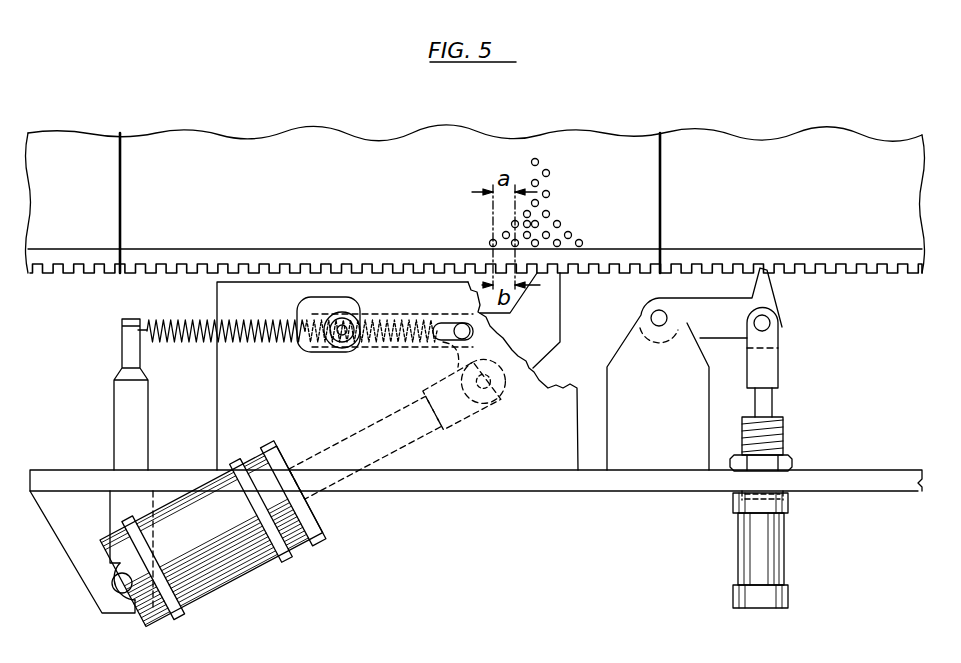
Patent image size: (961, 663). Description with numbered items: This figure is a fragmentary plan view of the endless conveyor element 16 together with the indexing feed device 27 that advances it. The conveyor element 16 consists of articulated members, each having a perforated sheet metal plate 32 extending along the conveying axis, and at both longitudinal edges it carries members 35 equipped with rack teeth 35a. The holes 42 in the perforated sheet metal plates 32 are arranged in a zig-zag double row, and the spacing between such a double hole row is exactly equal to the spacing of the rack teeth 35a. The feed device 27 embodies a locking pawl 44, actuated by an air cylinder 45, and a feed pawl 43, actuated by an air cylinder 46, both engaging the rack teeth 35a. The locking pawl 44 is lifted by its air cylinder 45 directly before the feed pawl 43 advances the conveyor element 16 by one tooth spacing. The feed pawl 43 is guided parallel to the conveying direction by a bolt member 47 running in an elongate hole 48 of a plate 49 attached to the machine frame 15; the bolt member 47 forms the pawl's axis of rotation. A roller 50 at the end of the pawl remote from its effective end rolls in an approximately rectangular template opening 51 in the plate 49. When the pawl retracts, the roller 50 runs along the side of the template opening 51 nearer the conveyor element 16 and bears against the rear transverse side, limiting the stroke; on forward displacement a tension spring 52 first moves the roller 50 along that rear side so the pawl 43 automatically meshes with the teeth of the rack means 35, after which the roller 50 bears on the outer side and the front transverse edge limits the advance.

The machine frame 15 is at (471, 492).
The endless conveyor element 16 is at (160, 168).
The indexing feed device 27 is at (566, 494).
The perforated sheet metal plate 32 is at (345, 165).
The rack member 35 is at (120, 201).
The rack teeth 35a is at (616, 272).
The holes 42 is at (571, 235).
The feed pawl 43 is at (556, 308).
The locking pawl 44 is at (767, 287).
The air cylinder 45 is at (766, 533).
The air cylinder 46 is at (238, 540).
The bolt member 47 is at (473, 332).
The elongate hole 48 is at (444, 346).
The plate 49 is at (548, 447).
The roller 50 is at (352, 312).
The template opening 51 is at (305, 306).
The tension spring 52 is at (424, 318).